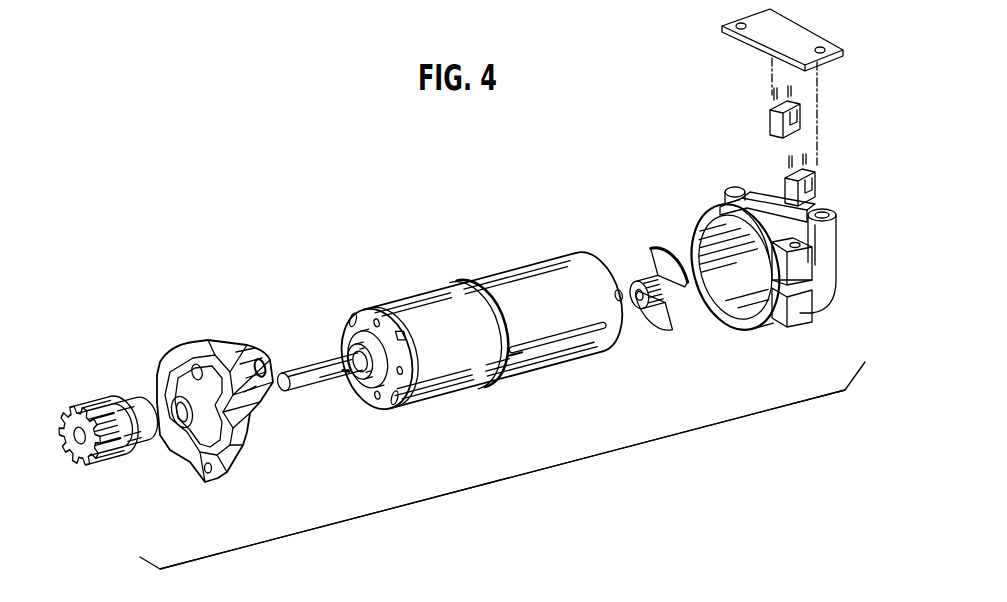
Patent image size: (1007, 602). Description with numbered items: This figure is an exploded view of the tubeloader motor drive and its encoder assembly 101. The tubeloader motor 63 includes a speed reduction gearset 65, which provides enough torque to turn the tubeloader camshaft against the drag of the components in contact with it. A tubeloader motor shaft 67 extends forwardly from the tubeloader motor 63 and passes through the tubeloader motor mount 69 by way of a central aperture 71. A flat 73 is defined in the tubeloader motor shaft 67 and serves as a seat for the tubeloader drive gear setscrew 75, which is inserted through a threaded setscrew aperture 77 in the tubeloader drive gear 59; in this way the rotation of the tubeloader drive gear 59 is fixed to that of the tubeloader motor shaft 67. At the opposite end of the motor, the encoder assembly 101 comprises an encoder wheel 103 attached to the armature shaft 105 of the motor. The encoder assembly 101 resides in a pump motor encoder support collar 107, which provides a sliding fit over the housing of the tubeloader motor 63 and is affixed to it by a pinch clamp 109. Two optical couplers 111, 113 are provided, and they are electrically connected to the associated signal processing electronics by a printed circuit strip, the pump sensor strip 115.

The tubeloader drive gear 59 is at (92, 400).
The tubeloader drive gear setscrew 75 is at (112, 468).
The threaded setscrew aperture 77 is at (131, 443).
The central aperture 71 is at (177, 414).
The tubeloader motor mount 69 is at (247, 433).
The tubeloader motor shaft 67 is at (305, 362).
The flat 73 is at (343, 378).
The speed reduction gearset 65 is at (418, 292).
The tubeloader motor 63 is at (513, 372).
The encoder assembly 101 is at (403, 208).
The armature shaft 105 is at (628, 276).
The encoder wheel 103 is at (658, 318).
The pump motor encoder support collar 107 is at (748, 330).
The pinch clamp 109 is at (800, 318).
The optical coupler 111 is at (774, 120).
The optical coupler 113 is at (790, 185).
The pump sensor strip 115 is at (765, 36).